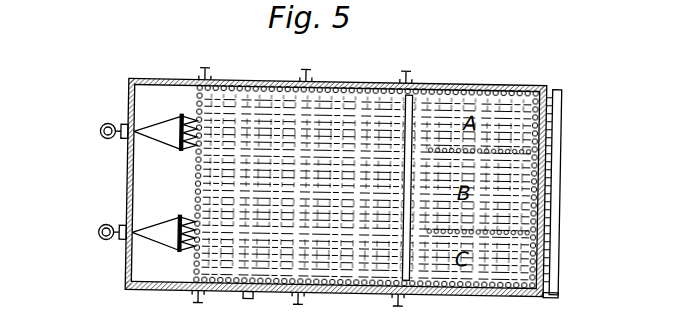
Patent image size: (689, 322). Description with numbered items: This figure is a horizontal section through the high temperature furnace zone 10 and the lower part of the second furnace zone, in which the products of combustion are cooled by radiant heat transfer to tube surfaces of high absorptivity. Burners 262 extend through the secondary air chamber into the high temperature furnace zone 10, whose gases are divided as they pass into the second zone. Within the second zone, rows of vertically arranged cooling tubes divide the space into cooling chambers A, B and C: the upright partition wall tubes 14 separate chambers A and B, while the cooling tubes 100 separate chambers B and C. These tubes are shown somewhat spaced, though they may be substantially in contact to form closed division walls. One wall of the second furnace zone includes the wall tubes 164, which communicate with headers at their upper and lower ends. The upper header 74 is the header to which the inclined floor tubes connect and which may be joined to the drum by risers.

The high temperature furnace zone 10 is at (366, 188).
The upright partition wall tubes 14 is at (535, 155).
The upper header 74 is at (561, 157).
The cooling tubes 100 is at (528, 231).
The wall tubes 164 is at (540, 191).
The burners 262 is at (103, 227).